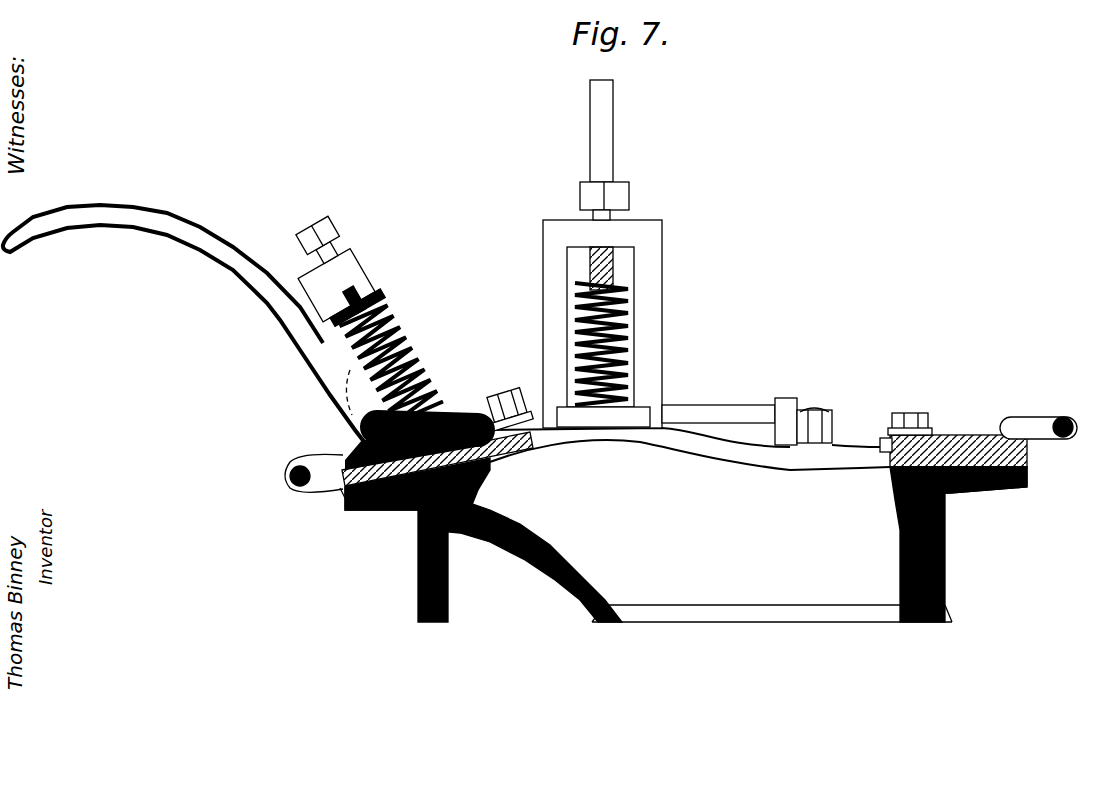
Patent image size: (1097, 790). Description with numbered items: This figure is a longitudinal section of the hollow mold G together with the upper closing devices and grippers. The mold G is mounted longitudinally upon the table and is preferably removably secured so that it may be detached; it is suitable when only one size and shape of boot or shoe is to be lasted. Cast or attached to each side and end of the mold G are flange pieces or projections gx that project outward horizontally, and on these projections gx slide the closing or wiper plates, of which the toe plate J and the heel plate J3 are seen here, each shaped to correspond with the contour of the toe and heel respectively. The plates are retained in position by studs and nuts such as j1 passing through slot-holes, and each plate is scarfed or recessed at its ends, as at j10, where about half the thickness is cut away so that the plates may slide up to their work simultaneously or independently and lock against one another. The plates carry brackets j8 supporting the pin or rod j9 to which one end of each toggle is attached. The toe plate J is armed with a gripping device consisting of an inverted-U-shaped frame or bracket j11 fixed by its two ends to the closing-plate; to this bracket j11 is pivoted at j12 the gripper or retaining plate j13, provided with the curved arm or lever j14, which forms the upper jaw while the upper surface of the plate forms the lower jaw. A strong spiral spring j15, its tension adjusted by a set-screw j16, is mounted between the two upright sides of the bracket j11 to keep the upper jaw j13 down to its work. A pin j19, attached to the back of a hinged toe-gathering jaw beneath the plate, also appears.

The hollow mold G is at (686, 540).
The arched web of casting g is at (542, 506).
The flange or projecting pieces gx is at (383, 498).
The toe closing or wiper plate J is at (372, 458).
The heel closing or wiper plate J3 is at (946, 435).
The stud and nut j1 is at (717, 448).
The bracket j8 is at (790, 398).
The pin or rod j9 is at (722, 390).
The scarfed or recessed end j10 is at (535, 434).
The inverted-U-shaped frame or bracket j11 is at (662, 270).
The pivot j12 is at (350, 428).
The gripper or retaining plate j13 is at (623, 421).
The curved arm or lever j14 is at (153, 232).
The spiral spring j15 is at (630, 333).
The set-screw j16 is at (629, 196).
The pin j19 is at (340, 490).